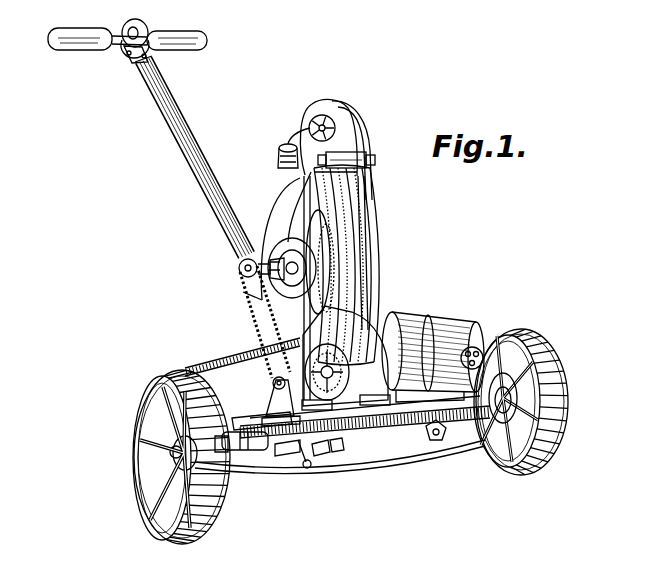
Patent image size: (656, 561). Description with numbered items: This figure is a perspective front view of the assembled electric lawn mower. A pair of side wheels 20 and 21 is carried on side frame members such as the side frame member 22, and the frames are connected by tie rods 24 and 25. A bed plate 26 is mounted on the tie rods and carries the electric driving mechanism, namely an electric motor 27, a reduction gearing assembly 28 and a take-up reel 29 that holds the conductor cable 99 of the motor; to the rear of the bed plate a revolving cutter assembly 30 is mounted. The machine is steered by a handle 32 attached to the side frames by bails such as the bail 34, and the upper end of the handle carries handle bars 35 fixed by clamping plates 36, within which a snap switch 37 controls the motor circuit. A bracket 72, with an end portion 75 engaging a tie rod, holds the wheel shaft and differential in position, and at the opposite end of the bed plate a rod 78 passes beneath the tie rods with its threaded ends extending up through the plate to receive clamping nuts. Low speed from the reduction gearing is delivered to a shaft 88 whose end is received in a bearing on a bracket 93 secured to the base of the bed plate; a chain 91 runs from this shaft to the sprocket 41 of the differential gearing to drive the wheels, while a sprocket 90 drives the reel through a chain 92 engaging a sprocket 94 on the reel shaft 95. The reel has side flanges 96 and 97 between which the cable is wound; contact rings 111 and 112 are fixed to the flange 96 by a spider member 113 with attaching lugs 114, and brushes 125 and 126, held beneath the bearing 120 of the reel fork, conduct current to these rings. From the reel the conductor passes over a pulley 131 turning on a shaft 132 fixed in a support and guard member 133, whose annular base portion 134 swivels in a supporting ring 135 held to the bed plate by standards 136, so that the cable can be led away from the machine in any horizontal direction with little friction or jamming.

The side wheel 20 is at (548, 395).
The side wheel 21 is at (178, 376).
The side frame member 22 is at (520, 380).
The tie rod 24 is at (236, 420).
The tie rod 25 is at (467, 422).
The bed plate 26 is at (312, 464).
The electric motor 27 is at (468, 326).
The reduction gearing assembly 28 is at (346, 328).
The take-up reel 29 is at (378, 248).
The revolving cutter assembly 30 is at (386, 468).
The handle 32 is at (182, 143).
The bail 34 is at (203, 360).
The handle bars 35 is at (73, 46).
The clamping plates 36 is at (134, 58).
The snap switch 37 is at (148, 30).
The sprocket 41 is at (314, 470).
The bracket 72 is at (232, 456).
The end portion 75 is at (288, 462).
The rod 78 is at (435, 432).
The shaft 88 is at (276, 377).
The sprocket 90 is at (272, 378).
The chain 91 is at (335, 453).
The chain 92 is at (243, 293).
The bracket 93 is at (252, 456).
The sprocket 94 is at (252, 252).
The shaft 95 is at (239, 266).
The side flange 96 is at (280, 206).
The side flange 97 is at (378, 238).
The conductor cable 99 is at (296, 132).
The contact ring 111 is at (287, 255).
The contact ring 112 is at (296, 210).
The spider member 113 is at (312, 260).
The attaching lugs 114 is at (326, 284).
The bearing 120 is at (276, 304).
The brush 125 is at (238, 287).
The brush 126 is at (242, 276).
The pulley 131 is at (306, 128).
The shaft 132 is at (326, 116).
The support and guard member 133 is at (348, 126).
The annular base portion 134 is at (352, 152).
The supporting ring 135 is at (368, 160).
The standards 136 is at (368, 206).